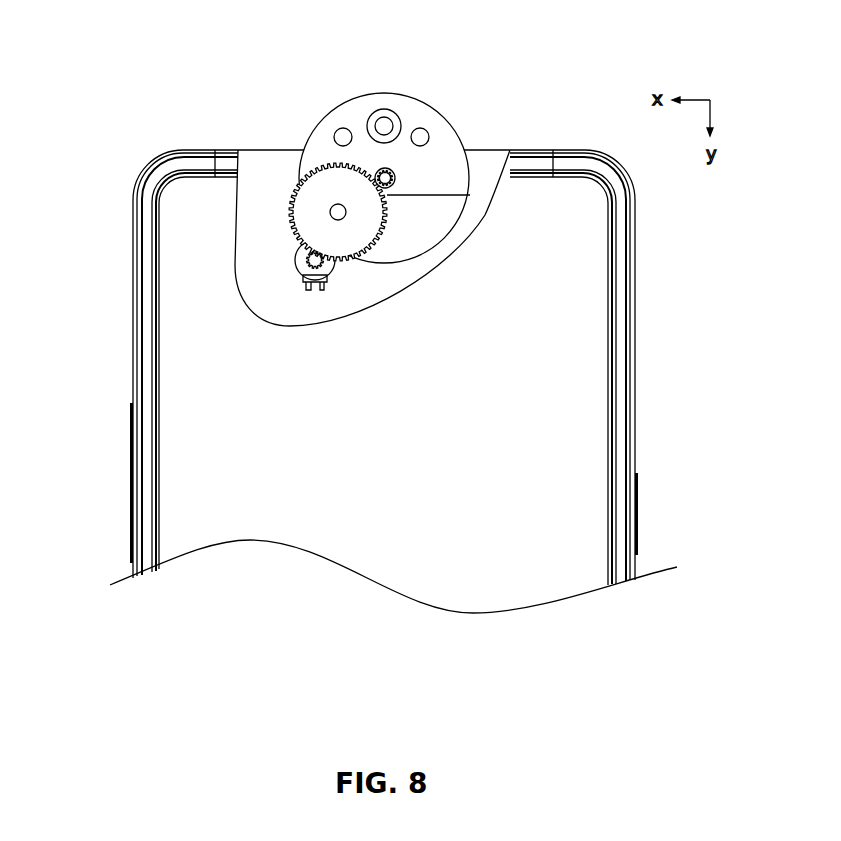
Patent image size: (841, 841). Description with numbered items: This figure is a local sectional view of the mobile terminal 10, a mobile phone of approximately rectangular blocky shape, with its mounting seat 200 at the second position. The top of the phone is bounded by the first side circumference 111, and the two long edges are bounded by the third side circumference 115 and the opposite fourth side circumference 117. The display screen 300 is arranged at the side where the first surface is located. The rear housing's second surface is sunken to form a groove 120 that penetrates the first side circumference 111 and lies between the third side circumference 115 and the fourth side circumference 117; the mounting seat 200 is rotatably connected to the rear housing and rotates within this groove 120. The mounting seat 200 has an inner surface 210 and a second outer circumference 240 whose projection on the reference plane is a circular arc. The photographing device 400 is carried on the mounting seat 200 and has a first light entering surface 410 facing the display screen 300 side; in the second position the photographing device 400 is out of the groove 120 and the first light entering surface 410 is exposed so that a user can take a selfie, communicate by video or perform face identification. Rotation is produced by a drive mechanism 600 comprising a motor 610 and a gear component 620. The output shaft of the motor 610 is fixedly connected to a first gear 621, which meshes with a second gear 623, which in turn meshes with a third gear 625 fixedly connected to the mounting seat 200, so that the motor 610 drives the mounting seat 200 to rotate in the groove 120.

The mobile terminal 10 is at (132, 112).
The first side circumference 111 is at (537, 153).
The third side circumference 115 is at (137, 385).
The fourth side circumference 117 is at (637, 422).
The groove 120 is at (417, 230).
The mounting seat 200 is at (399, 140).
The inner surface 210 is at (315, 153).
The second outer circumference 240 is at (372, 92).
The display screen 300 is at (190, 327).
The photographing device 400 is at (420, 80).
The first light entering surface 410 is at (395, 125).
The drive mechanism 600 is at (268, 178).
The motor 610 is at (296, 259).
The gear component 620 is at (297, 237).
The first gear 621 is at (304, 248).
The second gear 623 is at (293, 205).
The third gear 625 is at (394, 177).